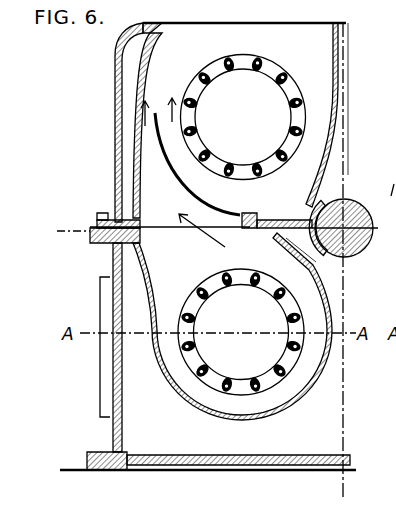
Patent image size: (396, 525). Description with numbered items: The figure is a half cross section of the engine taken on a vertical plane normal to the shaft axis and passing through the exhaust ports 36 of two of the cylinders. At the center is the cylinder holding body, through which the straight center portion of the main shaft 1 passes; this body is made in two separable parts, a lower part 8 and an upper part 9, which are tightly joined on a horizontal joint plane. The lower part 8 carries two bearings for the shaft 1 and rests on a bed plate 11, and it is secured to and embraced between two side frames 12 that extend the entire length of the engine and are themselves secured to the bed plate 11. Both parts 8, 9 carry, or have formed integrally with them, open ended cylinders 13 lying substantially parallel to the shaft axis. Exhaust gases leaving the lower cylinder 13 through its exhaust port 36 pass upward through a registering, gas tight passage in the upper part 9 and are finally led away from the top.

The straight center portion of the main shaft 1 is at (352, 199).
The lower part of the cylinder holding body 8 is at (112, 428).
The upper part of the cylinder holding body 9 is at (115, 85).
The bed plate 11 is at (170, 470).
The side frame 12 is at (110, 258).
The open ended cylinder 13 is at (245, 57).
The exhaust port 36 is at (265, 73).